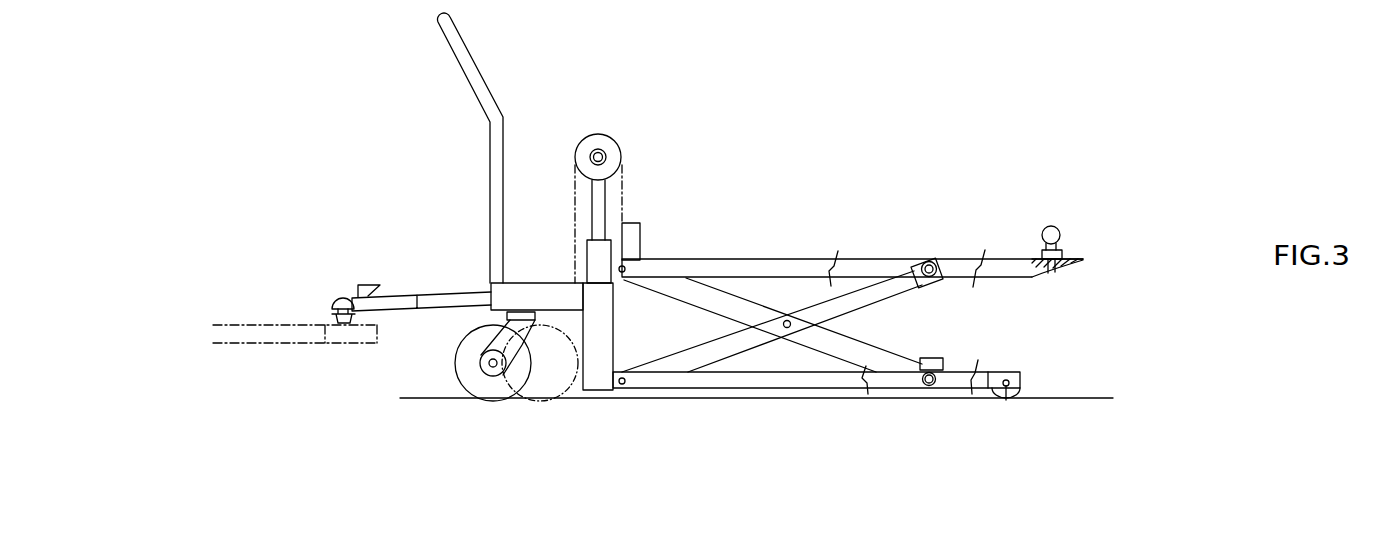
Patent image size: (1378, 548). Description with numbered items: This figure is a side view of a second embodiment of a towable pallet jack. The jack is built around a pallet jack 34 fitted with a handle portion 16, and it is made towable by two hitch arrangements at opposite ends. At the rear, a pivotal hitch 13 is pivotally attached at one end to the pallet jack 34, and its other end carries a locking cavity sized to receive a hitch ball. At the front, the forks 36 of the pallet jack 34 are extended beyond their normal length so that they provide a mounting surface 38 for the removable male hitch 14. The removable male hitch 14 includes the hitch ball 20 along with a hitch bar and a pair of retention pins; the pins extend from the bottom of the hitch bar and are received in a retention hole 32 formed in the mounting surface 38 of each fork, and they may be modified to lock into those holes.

The pivotal hitch 13 is at (343, 297).
The removable male hitch 14 is at (1061, 225).
The handle portion 16 is at (468, 63).
The hitch ball 20 is at (1040, 231).
The retention hole 32 is at (1052, 272).
The pallet jack 34 is at (814, 253).
The forks 36 is at (710, 270).
The mounting surface 38 is at (1085, 257).